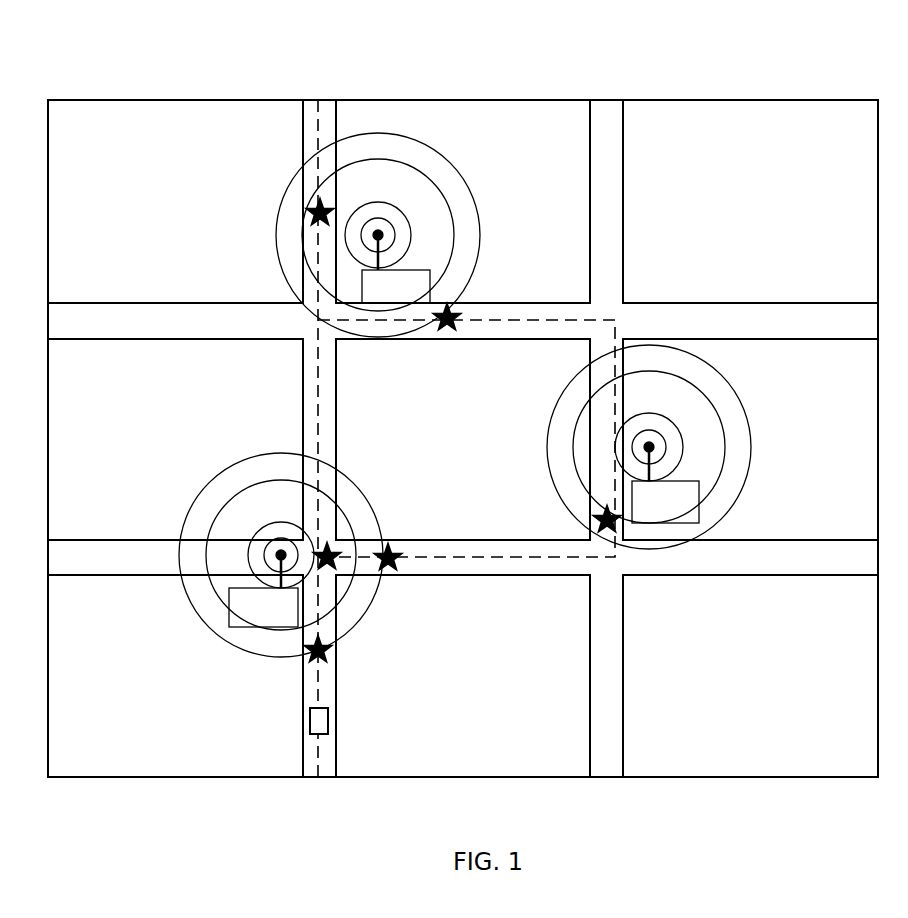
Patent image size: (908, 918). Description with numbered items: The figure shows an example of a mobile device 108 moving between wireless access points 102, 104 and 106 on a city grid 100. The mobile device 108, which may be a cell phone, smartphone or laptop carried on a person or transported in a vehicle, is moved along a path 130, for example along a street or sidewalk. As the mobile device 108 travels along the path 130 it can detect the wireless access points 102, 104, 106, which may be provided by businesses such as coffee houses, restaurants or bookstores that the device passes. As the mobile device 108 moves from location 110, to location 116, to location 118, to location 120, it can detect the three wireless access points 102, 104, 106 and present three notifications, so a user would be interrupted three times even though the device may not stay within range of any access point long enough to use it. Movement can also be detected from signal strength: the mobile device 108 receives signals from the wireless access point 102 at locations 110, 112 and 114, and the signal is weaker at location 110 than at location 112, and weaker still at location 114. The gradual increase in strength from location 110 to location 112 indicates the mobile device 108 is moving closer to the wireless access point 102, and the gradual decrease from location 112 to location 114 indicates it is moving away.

The city grid 100 is at (422, 97).
The wireless access point 102 is at (291, 621).
The wireless access point 104 is at (676, 514).
The wireless access point 106 is at (369, 297).
The mobile device 108 is at (332, 720).
The location 110 is at (335, 655).
The location 112 is at (339, 549).
The location 114 is at (408, 570).
The location 116 is at (581, 515).
The location 118 is at (445, 340).
The location 120 is at (303, 212).
The path 130 is at (316, 111).